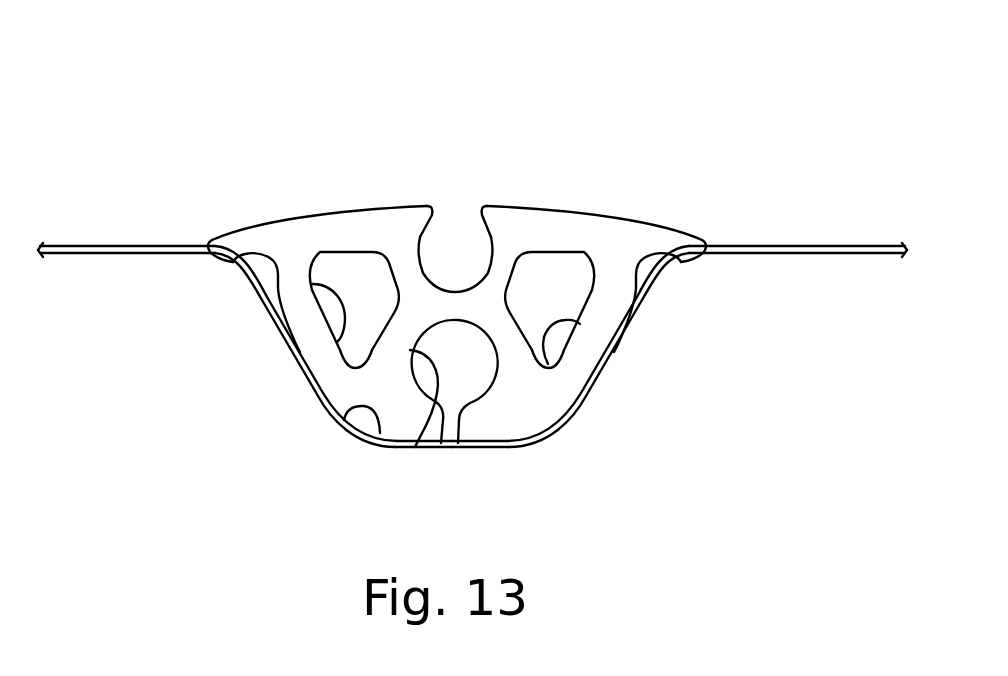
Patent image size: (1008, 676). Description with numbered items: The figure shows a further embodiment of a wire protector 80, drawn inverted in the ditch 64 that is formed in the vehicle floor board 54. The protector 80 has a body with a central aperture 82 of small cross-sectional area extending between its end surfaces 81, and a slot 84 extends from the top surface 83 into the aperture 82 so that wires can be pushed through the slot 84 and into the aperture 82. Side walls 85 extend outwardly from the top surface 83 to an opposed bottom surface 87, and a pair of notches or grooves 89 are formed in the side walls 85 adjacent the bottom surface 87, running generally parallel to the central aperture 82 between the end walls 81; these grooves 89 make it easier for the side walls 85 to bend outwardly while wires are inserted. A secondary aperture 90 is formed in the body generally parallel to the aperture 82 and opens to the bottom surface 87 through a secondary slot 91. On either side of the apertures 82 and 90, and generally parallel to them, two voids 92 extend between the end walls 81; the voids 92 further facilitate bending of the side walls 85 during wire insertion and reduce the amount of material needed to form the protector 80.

The vehicle floor board 54 is at (108, 243).
The ditch 64 is at (373, 435).
The protector 80 is at (483, 135).
The end surfaces 81 is at (527, 226).
The central aperture 82 is at (415, 449).
The top surface 83 is at (533, 437).
The slot 84 is at (452, 450).
The side walls 85 is at (315, 385).
The bottom surface 87 is at (382, 205).
The notches or grooves 89 is at (267, 268).
The secondary aperture 90 is at (420, 263).
The secondary slot 91 is at (437, 207).
The voids 92 is at (337, 342).